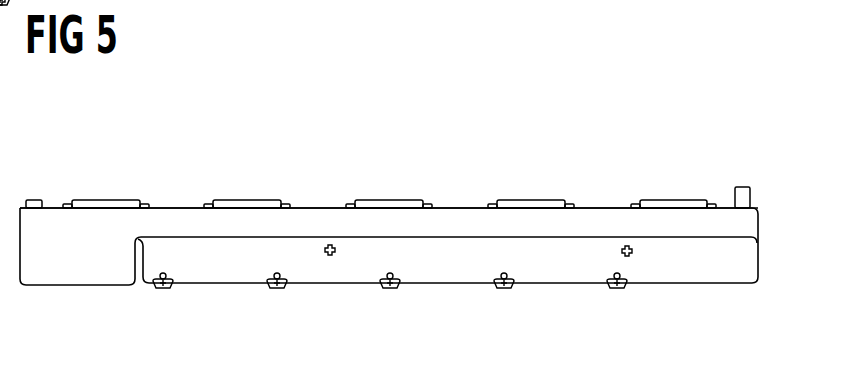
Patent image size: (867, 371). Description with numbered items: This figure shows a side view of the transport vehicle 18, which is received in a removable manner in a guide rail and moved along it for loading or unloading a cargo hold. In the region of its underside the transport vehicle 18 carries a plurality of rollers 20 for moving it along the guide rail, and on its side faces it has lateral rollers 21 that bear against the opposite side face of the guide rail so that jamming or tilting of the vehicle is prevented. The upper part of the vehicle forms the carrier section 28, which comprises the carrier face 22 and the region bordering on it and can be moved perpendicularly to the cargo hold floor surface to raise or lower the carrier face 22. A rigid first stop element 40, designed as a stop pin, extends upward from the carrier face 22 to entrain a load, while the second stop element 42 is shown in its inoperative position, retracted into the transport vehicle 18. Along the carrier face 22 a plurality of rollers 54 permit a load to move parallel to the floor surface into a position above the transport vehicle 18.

The transport vehicle 18 is at (620, 140).
The rollers 20 is at (164, 290).
The lateral rollers 21 is at (329, 257).
The carrier face 22 is at (178, 207).
The carrier section 28 is at (306, 225).
The first stop element 40 is at (742, 190).
The second stop element 42 is at (34, 199).
The rollers 54 is at (106, 203).